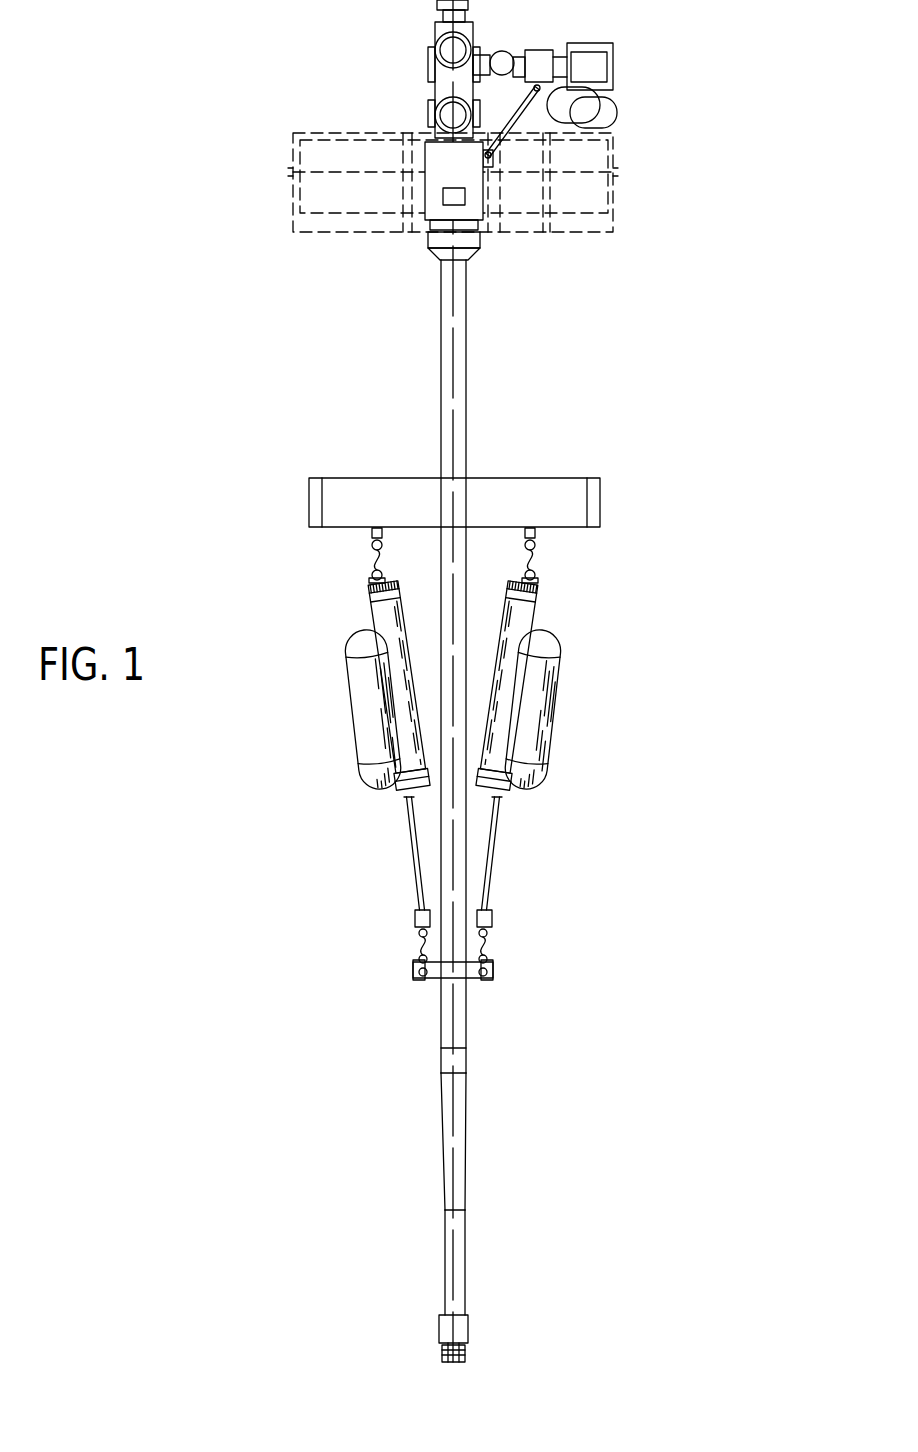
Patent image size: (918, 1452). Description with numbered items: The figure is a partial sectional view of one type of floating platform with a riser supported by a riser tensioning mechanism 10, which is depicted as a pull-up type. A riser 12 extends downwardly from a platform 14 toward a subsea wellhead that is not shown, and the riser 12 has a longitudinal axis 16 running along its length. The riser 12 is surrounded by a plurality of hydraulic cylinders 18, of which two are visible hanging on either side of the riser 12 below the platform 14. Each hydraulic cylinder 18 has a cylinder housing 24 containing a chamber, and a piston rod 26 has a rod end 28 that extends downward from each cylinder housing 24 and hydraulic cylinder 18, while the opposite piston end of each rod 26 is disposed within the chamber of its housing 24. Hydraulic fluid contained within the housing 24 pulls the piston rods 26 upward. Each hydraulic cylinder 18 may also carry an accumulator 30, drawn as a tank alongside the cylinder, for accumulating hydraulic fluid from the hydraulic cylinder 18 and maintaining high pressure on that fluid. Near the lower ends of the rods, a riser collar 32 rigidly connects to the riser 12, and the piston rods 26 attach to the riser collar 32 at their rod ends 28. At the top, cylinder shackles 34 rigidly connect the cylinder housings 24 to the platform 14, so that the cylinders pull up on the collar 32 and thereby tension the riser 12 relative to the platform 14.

The riser tensioning mechanism 10 is at (690, 838).
The riser 12 is at (460, 1173).
The platform 14 is at (330, 503).
The longitudinal axis 16 is at (460, 1277).
The hydraulic cylinder 18 is at (552, 597).
The cylinder housing 24 is at (507, 690).
The piston rod 26 is at (497, 835).
The rod end 28 is at (488, 908).
The accumulator 30 is at (362, 710).
The riser collar 32 is at (470, 972).
The cylinder shackle 34 is at (372, 557).